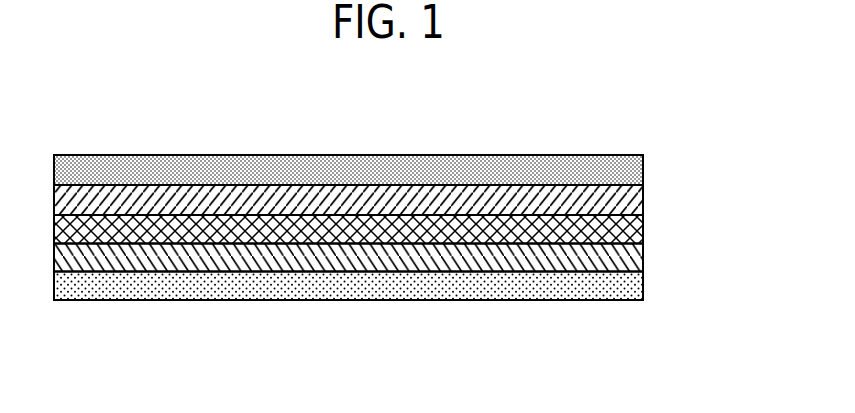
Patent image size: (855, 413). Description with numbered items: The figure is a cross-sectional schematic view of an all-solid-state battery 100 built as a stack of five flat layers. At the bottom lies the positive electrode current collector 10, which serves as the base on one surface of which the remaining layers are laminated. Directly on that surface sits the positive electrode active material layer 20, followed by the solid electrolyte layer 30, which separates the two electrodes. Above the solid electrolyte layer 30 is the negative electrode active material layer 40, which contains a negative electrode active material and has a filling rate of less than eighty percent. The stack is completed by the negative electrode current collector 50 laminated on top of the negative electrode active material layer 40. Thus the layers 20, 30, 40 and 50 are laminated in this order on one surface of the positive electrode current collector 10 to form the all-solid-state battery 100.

The all-solid-state battery 100 is at (388, 120).
The negative electrode current collector 50 is at (644, 175).
The negative electrode active material layer 40 is at (644, 205).
The solid electrolyte layer 30 is at (644, 233).
The positive electrode active material layer 20 is at (644, 262).
The positive electrode current collector 10 is at (644, 292).